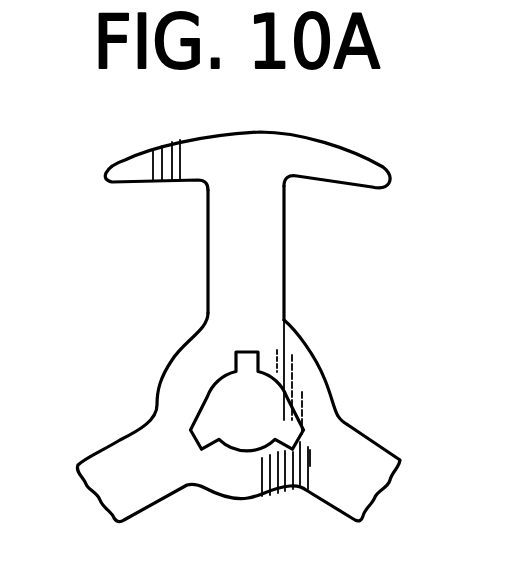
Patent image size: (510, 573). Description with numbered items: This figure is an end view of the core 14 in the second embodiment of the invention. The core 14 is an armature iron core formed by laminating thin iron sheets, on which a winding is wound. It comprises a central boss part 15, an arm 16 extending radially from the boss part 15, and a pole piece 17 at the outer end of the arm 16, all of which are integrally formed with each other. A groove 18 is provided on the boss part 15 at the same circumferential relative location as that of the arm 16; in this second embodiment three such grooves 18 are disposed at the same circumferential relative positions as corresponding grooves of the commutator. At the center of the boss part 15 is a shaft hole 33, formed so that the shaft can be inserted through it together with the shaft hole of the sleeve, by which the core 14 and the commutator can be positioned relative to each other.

The core 14 is at (178, 270).
The boss part 15 is at (300, 385).
The arm 16 is at (257, 262).
The pole piece 17 is at (340, 165).
The groove 18 is at (240, 350).
The shaft hole 33 is at (237, 430).